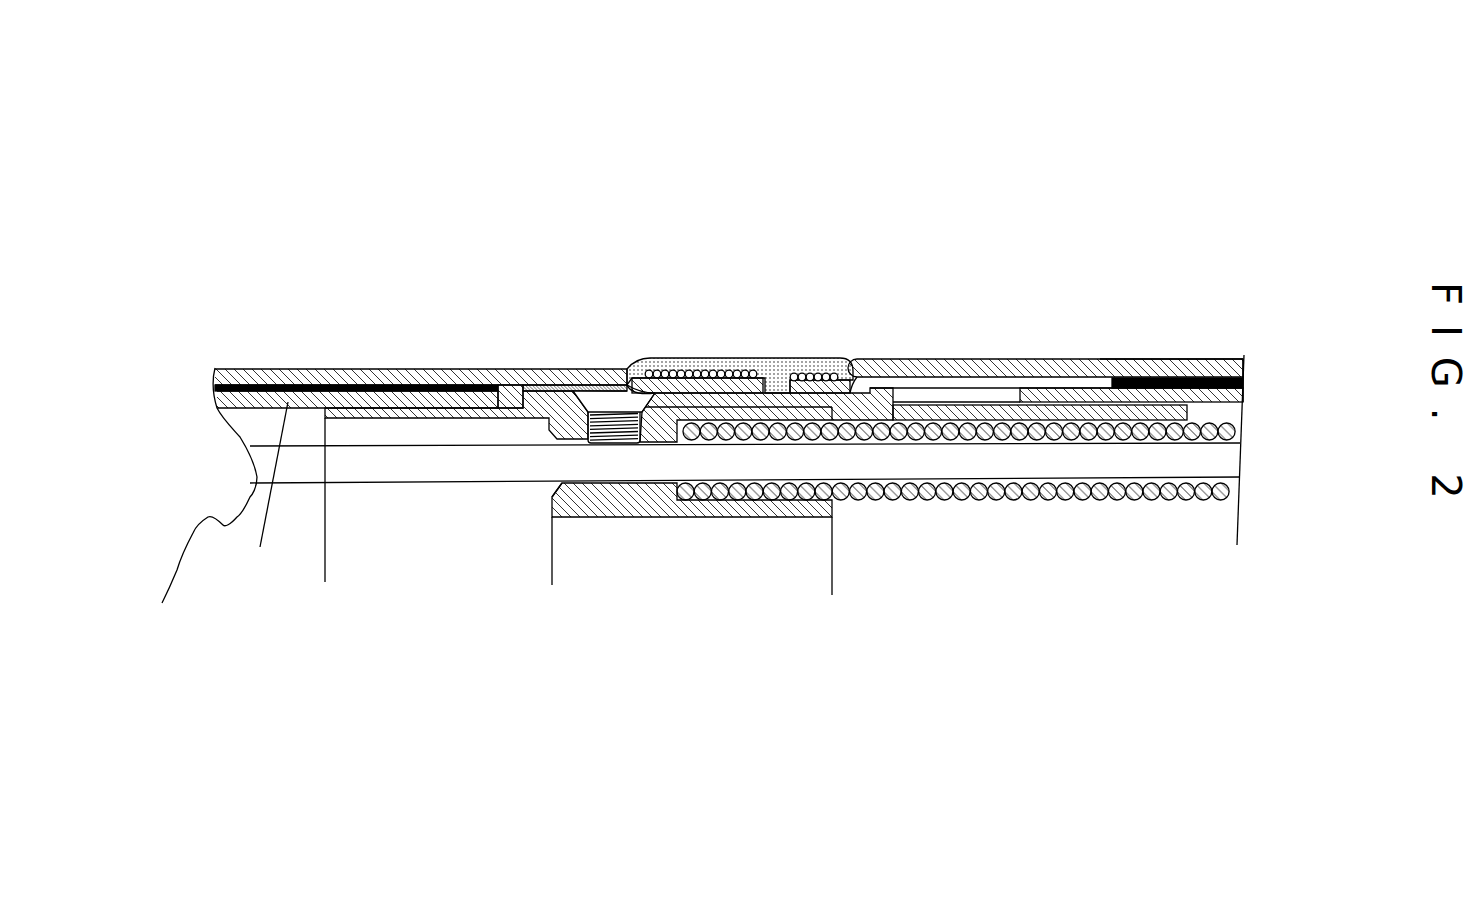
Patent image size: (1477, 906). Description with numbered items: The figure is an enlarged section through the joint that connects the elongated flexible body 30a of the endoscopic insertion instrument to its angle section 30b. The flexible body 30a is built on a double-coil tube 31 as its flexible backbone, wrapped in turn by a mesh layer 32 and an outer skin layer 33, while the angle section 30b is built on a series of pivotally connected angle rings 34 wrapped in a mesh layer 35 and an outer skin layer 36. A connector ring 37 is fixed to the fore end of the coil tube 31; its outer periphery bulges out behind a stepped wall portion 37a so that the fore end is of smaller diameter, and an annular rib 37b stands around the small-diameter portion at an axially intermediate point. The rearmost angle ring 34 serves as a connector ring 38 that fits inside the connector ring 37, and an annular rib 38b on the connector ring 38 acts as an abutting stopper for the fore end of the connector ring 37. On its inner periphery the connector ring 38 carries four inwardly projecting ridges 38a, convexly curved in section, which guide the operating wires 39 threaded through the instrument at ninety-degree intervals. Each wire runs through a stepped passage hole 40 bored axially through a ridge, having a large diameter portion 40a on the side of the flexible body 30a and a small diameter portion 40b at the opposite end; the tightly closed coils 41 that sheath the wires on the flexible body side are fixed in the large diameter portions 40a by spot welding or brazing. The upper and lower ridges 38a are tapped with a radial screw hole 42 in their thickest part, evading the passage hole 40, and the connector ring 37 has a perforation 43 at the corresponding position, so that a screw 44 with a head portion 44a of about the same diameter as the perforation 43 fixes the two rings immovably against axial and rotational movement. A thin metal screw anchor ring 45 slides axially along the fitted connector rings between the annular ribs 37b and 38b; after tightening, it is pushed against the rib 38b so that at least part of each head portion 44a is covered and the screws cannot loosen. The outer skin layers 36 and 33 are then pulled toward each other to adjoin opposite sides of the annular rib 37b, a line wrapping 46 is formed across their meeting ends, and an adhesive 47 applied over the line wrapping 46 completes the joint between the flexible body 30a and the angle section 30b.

The elongated flexible body 30a is at (1168, 342).
The angle section 30b is at (409, 336).
The double-coil tube 31 is at (1205, 402).
The mesh layer 32 is at (1208, 380).
The outer skin layer 33 is at (1118, 361).
The angle rings 34 is at (318, 504).
The mesh layer 35 is at (253, 383).
The outer skin layer 36 is at (344, 370).
The connector ring 37 is at (973, 365).
The stepped wall portion 37a is at (855, 362).
The annular rib 37b is at (780, 380).
The connector ring 38 is at (383, 434).
The inwardly projecting ridges 38a is at (572, 510).
The annular rib 38b is at (507, 393).
The operating wires 39 is at (1102, 465).
The passage holes 40 is at (570, 470).
The large diameter portion 40a is at (782, 487).
The small diameter portion 40b is at (672, 440).
The tightly closed coils 41 is at (980, 495).
The screw hole 42 is at (627, 430).
The perforation 43 is at (627, 388).
The screw 44 is at (600, 443).
The head portion 44a is at (593, 400).
The screw anchor ring 45 is at (553, 386).
The line wrapping 46 is at (693, 366).
The adhesive 47 is at (808, 380).